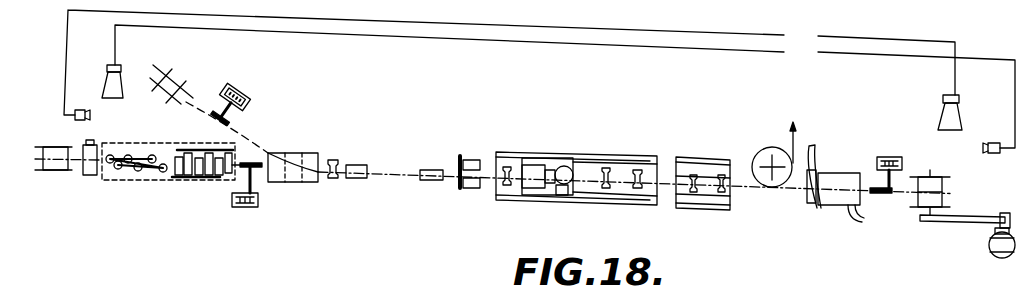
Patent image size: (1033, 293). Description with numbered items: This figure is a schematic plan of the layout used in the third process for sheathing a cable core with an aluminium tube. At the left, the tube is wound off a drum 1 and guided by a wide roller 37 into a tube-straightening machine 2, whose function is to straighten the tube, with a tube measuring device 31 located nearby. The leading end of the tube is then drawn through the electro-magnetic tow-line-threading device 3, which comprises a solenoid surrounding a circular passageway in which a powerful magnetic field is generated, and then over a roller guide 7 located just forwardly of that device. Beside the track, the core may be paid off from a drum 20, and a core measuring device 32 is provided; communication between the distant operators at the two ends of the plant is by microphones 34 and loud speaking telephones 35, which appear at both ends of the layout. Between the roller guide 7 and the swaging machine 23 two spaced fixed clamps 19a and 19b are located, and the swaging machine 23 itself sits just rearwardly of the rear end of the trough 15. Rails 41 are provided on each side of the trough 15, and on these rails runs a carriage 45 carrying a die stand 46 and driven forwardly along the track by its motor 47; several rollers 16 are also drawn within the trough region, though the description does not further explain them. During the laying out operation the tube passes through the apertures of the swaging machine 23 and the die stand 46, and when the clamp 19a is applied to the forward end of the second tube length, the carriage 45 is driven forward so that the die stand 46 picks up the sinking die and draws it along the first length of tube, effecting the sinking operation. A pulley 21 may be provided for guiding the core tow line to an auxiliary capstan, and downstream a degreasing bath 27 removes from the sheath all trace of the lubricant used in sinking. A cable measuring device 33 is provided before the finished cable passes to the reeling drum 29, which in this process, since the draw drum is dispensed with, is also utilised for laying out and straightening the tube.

The drum 1 is at (58, 172).
The wide roller 37 is at (92, 177).
The tube-straightening machine 2 is at (156, 183).
The tube measuring device 31 is at (237, 207).
The electro-magnetic tow-line-threading device 3 is at (295, 153).
The roller guide 7 is at (333, 159).
The fixed clamp 19a is at (357, 179).
The fixed clamp 19b is at (432, 181).
The drum 20 is at (187, 78).
The core measuring device 32 is at (240, 82).
The microphones 34 is at (82, 110).
The loud speaking telephones 35 is at (121, 78).
The swaging machine 23 is at (469, 158).
The rails 41 is at (647, 155).
The trough 15 is at (620, 164).
The roller 16 is at (604, 168).
The die stand 46 is at (546, 162).
The carriage 45 is at (545, 190).
The motor 47 is at (568, 166).
The pulley 21 is at (753, 161).
The degreasing bath 27 is at (836, 207).
The cable measuring device 33 is at (885, 157).
The reeling drum 29 is at (943, 200).